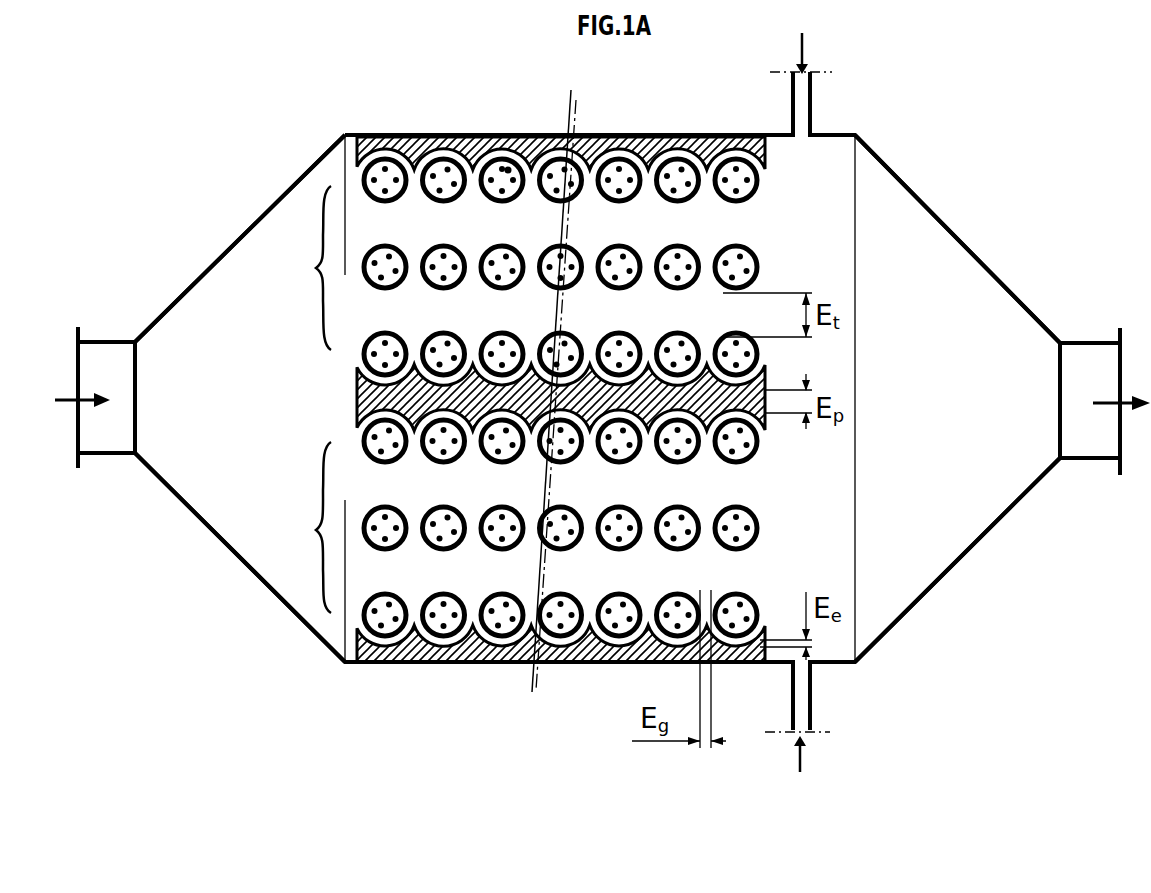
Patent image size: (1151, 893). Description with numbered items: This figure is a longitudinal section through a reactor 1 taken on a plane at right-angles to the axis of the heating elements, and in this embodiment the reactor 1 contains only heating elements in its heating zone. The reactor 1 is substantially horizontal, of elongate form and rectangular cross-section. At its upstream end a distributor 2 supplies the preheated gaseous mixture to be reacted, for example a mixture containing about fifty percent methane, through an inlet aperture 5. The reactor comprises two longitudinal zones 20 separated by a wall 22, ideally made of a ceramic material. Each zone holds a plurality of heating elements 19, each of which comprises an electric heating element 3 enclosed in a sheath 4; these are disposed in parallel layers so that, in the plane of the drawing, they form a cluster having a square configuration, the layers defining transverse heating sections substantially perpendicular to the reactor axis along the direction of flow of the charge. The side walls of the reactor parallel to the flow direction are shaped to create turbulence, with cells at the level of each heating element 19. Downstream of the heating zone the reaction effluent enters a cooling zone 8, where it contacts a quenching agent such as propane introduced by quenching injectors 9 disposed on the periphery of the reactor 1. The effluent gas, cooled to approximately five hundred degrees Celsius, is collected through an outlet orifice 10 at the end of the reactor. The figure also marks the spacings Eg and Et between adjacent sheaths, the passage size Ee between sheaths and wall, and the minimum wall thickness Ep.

The reactor 1 is at (372, 150).
The distributor 2 is at (180, 298).
The electric heating elements 3 is at (397, 180).
The sheaths 4 is at (509, 168).
The inlet aperture 5 is at (112, 350).
The cooling zone 8 is at (990, 270).
The quenching injectors 9 is at (805, 110).
The outlet orifice 10 is at (1093, 340).
The heating elements 19 is at (459, 163).
The longitudinal zones 20 is at (307, 399).
The wall 22 is at (357, 386).